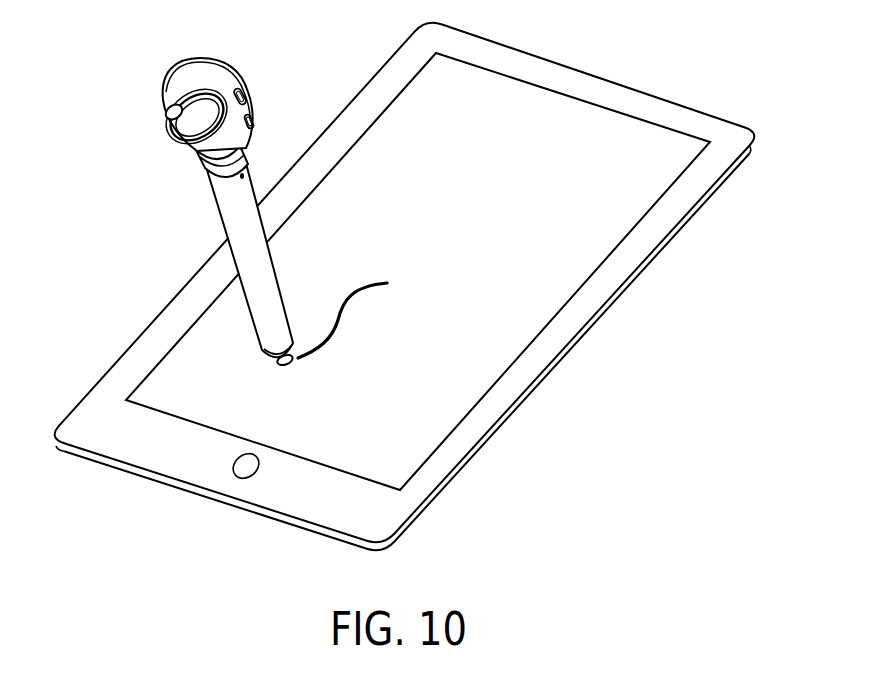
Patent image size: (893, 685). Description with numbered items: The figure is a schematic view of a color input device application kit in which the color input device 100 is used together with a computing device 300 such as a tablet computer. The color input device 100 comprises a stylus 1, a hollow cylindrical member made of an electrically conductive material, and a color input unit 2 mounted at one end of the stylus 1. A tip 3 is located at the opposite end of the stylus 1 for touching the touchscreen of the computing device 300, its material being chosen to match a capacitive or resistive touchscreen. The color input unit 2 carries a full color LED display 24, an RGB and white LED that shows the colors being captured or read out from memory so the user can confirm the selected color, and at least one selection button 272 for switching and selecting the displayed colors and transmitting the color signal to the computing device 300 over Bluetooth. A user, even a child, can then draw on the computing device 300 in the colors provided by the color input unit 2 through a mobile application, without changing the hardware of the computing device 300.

The computing device 300 is at (578, 68).
The color input device 100 is at (225, 221).
The stylus 1 is at (246, 290).
The color input unit 2 is at (216, 84).
The tip 3 is at (289, 366).
The full color LED display 24 is at (170, 112).
The selection button 272 is at (244, 83).